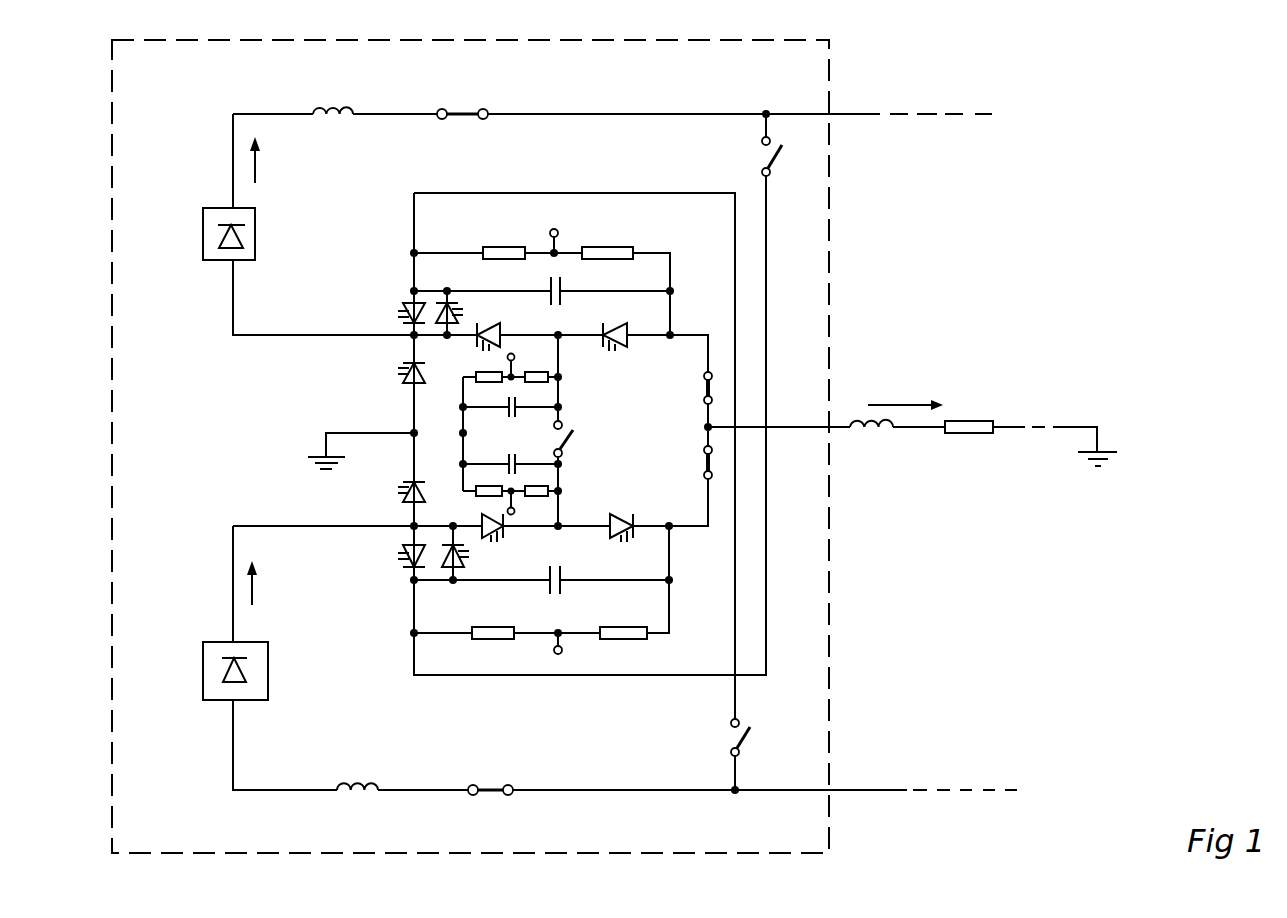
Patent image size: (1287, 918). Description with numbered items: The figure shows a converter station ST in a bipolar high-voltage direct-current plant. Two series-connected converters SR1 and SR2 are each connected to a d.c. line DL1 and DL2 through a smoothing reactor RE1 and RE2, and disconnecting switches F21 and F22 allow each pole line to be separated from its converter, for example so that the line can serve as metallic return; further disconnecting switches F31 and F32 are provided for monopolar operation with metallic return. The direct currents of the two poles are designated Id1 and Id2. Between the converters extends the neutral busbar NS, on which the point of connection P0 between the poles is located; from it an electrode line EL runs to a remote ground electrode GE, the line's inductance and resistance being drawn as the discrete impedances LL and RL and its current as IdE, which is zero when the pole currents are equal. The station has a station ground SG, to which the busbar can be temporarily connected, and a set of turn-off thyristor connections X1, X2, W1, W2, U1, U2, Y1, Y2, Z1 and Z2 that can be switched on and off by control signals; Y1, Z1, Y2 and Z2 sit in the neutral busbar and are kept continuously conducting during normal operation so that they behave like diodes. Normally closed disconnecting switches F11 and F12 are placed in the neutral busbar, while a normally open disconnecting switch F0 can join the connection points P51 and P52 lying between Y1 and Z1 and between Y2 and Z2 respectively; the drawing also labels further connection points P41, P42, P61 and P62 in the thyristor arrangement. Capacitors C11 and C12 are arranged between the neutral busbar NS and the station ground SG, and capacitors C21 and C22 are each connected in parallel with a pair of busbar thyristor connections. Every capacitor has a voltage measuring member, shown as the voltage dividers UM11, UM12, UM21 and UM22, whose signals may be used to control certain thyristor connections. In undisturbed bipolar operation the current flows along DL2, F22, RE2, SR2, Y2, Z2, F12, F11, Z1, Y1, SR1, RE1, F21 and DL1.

The station ST is at (171, 844).
The d.c. line DL1 is at (860, 112).
The d.c. line DL2 is at (845, 797).
The smoothing reactor RE1 is at (331, 103).
The smoothing reactor RE2 is at (355, 800).
The disconnecting switch F21 is at (463, 103).
The disconnecting switch F22 is at (500, 800).
The disconnecting switch F31 is at (747, 153).
The disconnecting switch F32 is at (732, 738).
The converter SR1 is at (210, 263).
The converter SR2 is at (222, 703).
The direct current of the first pole Id1 is at (269, 160).
The direct current of the second pole Id2 is at (268, 583).
The direct current in the electrode line IdE is at (905, 387).
The connection point P61 is at (410, 290).
The connection point P62 is at (412, 582).
The connection point P41 is at (410, 337).
The connection point P42 is at (410, 530).
The connection point P51 is at (560, 337).
The connection point P52 is at (560, 522).
The point of connection P0 is at (700, 428).
The voltage divider UM21 is at (564, 248).
The voltage divider UM22 is at (565, 650).
The voltage divider UM11 is at (515, 375).
The voltage divider UM12 is at (514, 508).
The capacitor C21 is at (566, 284).
The capacitor C22 is at (572, 568).
The capacitor C11 is at (516, 415).
The capacitor C12 is at (503, 464).
The disconnecting switch F0 is at (578, 442).
The turn-off thyristor connection W1 is at (402, 305).
The turn-off thyristor connection W2 is at (402, 565).
The turn-off thyristor connection U1 is at (462, 310).
The turn-off thyristor connection U2 is at (462, 575).
The turn-off thyristor connection X1 is at (388, 370).
The turn-off thyristor connection X2 is at (390, 492).
The turn-off thyristor connection Y1 is at (500, 327).
The turn-off thyristor connection Y2 is at (500, 545).
The turn-off thyristor connection Z1 is at (613, 352).
The turn-off thyristor connection Z2 is at (625, 520).
The station ground SG is at (302, 466).
The neutral busbar NS is at (696, 345).
The disconnecting switch F11 is at (700, 392).
The disconnecting switch F12 is at (700, 466).
The inductance of the electrode line LL is at (872, 440).
The resistance of the electrode line RL is at (968, 440).
The electrode line EL is at (1036, 420).
The ground electrode GE is at (1083, 478).